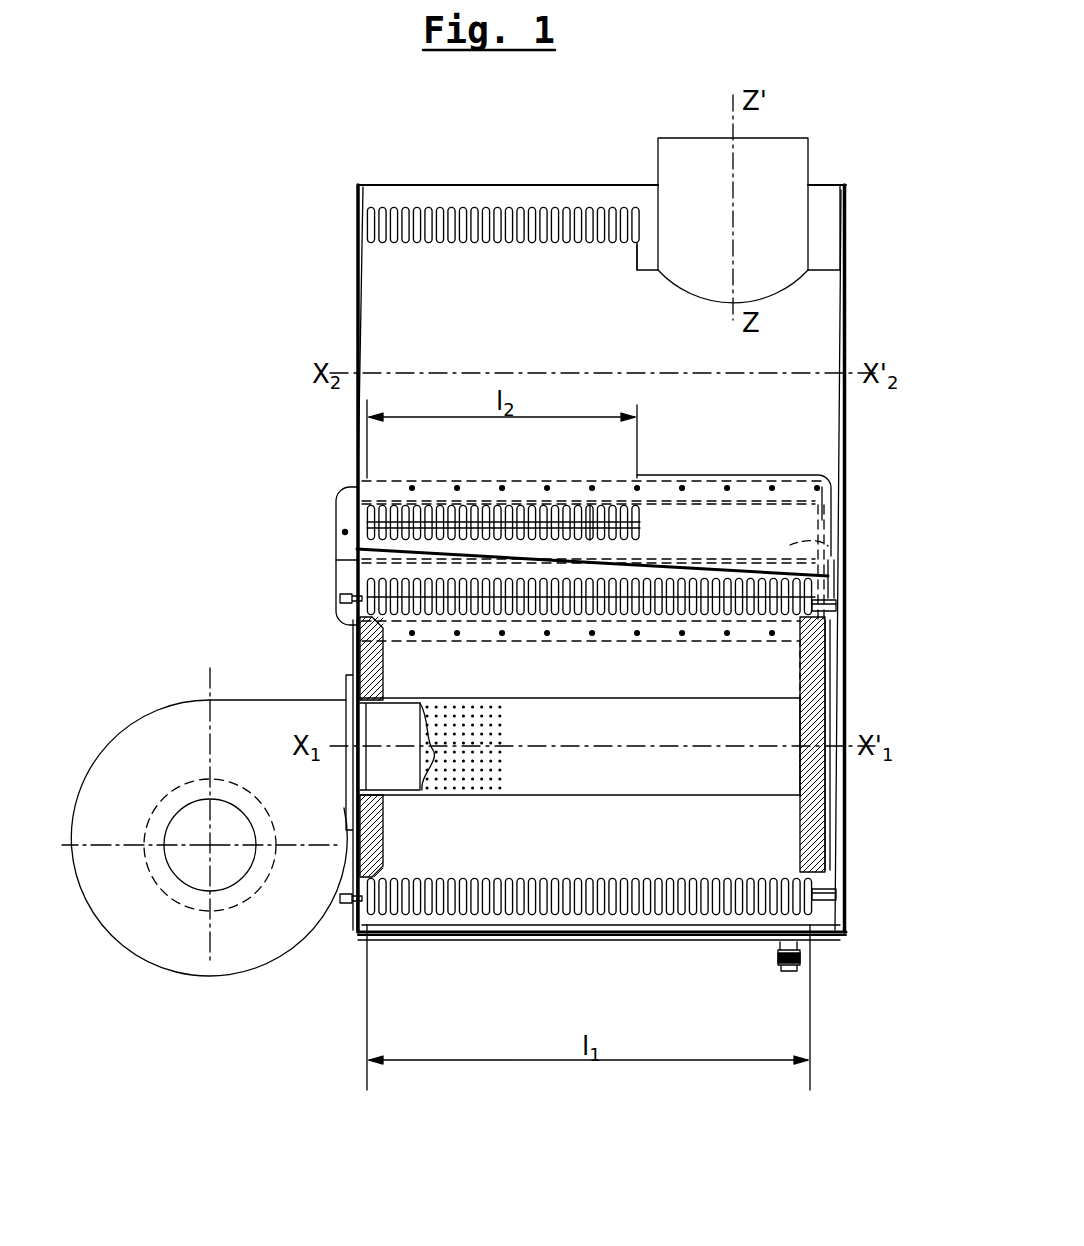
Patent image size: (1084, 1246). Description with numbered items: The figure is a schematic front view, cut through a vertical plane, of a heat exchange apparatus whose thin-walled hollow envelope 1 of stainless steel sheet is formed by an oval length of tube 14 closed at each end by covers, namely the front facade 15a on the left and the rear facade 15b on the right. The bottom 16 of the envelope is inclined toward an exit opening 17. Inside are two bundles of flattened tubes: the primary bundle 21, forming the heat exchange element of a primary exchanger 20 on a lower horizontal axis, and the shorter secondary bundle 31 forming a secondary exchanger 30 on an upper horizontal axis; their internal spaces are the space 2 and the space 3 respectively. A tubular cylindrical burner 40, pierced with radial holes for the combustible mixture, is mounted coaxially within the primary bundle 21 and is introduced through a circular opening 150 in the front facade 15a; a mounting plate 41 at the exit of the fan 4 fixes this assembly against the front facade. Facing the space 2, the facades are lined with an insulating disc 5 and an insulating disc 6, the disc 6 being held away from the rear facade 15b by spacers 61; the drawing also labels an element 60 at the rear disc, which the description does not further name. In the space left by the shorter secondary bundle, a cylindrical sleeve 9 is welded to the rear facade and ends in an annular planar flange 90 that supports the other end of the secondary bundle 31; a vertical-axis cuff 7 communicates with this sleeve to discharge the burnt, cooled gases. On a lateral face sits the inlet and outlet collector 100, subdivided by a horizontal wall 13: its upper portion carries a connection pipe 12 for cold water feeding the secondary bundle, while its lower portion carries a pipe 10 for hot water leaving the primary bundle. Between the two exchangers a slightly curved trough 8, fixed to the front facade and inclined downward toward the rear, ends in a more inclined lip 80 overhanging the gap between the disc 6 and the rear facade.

The envelope 1 is at (357, 263).
The internal space of primary bundle 2 is at (582, 847).
The internal space of secondary bundle 3 is at (516, 307).
The fan 4 is at (170, 725).
The insulating disc 5 is at (384, 671).
The insulating disc 6 is at (815, 800).
The cuff 7 is at (692, 148).
The trough 8 is at (683, 566).
The cylindrical sleeve 9 is at (722, 475).
The pipe 10 is at (602, 617).
The connection pipe 12 is at (590, 505).
The horizontal wall 13 is at (840, 546).
The length of tube 14 is at (623, 186).
The front facade 15a is at (350, 459).
The rear facade 15b is at (846, 441).
The bottom 16 is at (718, 943).
The exit opening 17 is at (802, 958).
The primary exchanger 20 is at (475, 937).
The primary bundle 21 is at (590, 912).
The secondary exchanger 30 is at (421, 186).
The secondary bundle 31 is at (530, 207).
The burner 40 is at (718, 781).
The mounting plate 41 is at (346, 786).
The rear insulation 60 is at (828, 840).
The spacers 61 is at (832, 606).
The lip 80 is at (838, 578).
The annular planar flange 90 is at (632, 264).
The inlet and outlet collector 100 is at (835, 503).
The circular opening 150 is at (346, 720).